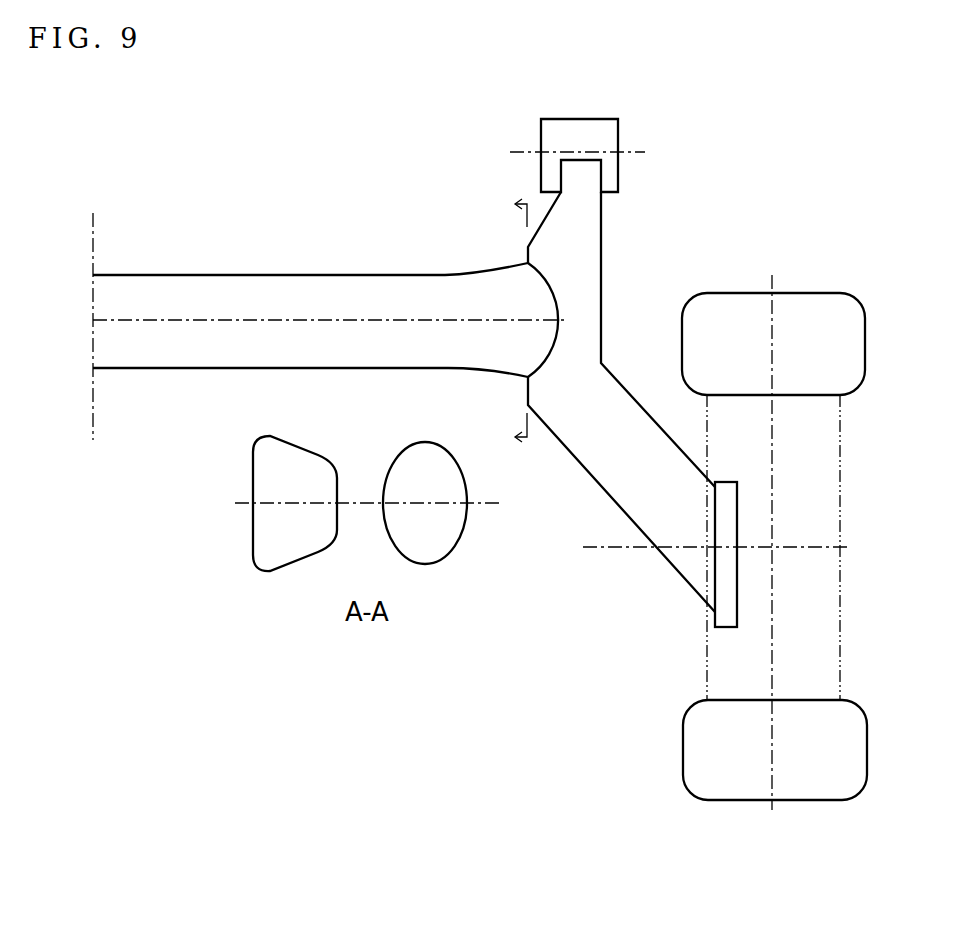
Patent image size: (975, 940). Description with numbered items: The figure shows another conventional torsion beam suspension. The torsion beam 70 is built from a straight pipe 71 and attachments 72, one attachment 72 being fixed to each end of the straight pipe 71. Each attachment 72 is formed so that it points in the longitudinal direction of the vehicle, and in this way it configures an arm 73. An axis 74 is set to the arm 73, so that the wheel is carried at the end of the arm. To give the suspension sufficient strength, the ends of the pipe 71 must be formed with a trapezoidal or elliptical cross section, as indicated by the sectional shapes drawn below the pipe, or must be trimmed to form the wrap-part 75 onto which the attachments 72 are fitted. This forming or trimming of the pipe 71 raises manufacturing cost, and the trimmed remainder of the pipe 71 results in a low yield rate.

The torsion beam 70 is at (216, 216).
The straight pipe 71 is at (277, 275).
The attachment 72 is at (622, 228).
The arm 73 is at (652, 508).
The axis 74 is at (848, 547).
The wrap-part 75 is at (543, 302).